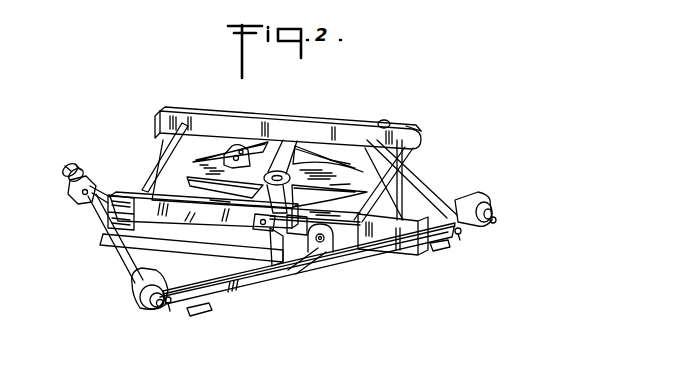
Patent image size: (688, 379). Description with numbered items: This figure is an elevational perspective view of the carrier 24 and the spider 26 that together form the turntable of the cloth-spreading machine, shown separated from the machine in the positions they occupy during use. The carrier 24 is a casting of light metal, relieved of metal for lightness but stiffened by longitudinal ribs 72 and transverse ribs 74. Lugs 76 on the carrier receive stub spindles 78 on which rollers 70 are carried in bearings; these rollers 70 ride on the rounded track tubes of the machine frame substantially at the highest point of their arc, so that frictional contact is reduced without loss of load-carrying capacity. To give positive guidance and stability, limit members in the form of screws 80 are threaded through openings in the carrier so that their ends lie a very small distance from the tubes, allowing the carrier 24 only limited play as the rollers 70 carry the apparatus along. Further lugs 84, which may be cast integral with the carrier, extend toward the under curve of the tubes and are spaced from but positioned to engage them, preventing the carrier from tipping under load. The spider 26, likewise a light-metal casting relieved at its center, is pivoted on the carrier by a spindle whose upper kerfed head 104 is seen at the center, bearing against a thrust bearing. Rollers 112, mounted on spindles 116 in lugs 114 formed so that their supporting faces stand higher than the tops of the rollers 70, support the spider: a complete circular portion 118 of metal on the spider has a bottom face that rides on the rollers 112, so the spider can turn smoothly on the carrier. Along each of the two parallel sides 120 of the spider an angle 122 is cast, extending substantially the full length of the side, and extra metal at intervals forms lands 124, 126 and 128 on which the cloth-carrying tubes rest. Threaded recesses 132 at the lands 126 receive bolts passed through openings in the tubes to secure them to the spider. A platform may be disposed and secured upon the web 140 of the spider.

The carrier 24 is at (280, 282).
The spider 26 is at (172, 107).
The rollers 70 is at (76, 168).
The longitudinal ribs 72 is at (250, 286).
The transverse ribs 74 is at (113, 253).
The lugs 76 is at (73, 199).
The stub spindles 78 is at (157, 318).
The screws 80 is at (172, 312).
The lugs 84 is at (206, 313).
The upper kerfed head 104 is at (278, 176).
The rollers 112 is at (241, 150).
The lugs 114 is at (283, 139).
The spindles 116 is at (326, 252).
The complete circular portion 118 is at (342, 150).
The parallel sides 120 is at (200, 111).
The angle 122 is at (113, 237).
The land 124 is at (118, 195).
The land 126 is at (232, 247).
The land 128 is at (406, 260).
The threaded recesses 132 is at (254, 231).
The web 140 is at (230, 152).